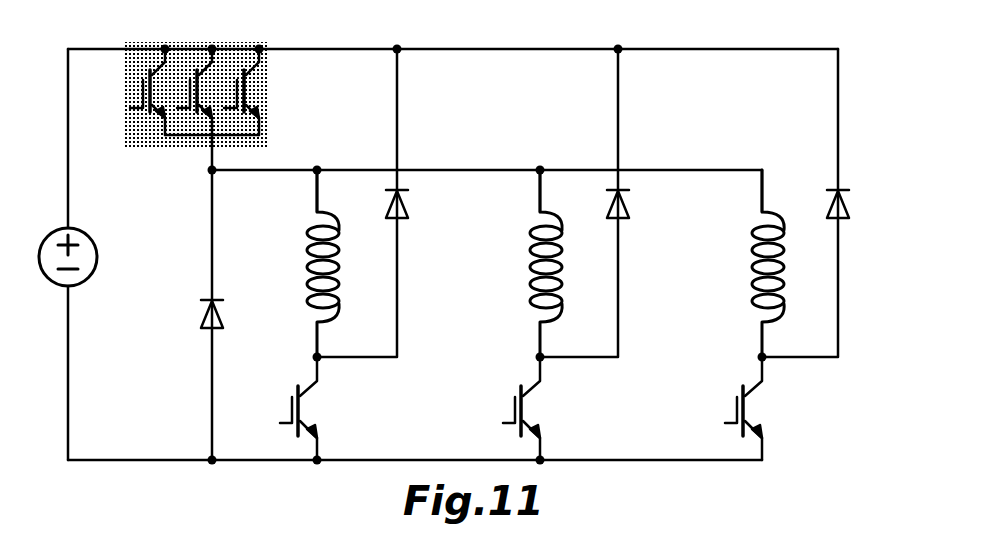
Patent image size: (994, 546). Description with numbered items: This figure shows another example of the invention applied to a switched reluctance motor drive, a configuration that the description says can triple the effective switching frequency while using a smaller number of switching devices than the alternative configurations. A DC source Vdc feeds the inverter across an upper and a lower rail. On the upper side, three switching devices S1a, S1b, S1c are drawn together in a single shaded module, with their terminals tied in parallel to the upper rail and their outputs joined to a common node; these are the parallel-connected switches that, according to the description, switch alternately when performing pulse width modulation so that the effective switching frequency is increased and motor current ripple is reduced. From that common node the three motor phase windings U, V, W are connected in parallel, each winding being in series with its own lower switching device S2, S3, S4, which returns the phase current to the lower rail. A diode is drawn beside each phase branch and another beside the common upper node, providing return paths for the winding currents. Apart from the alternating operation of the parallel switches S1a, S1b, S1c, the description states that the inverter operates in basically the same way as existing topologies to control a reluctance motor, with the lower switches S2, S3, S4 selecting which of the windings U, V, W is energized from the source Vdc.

The first switching element (phase a) S1a is at (191, 74).
The first switching element (phase b) S1b is at (200, 68).
The first switching element (phase c) S1c is at (256, 68).
The DC voltage source Vdc is at (94, 257).
The U-phase winding U is at (302, 263).
The V-phase winding V is at (525, 263).
The W-phase winding W is at (744, 263).
The switching element for U phase S2 is at (323, 408).
The switching element for V phase S3 is at (545, 408).
The switching element for W phase S4 is at (767, 408).